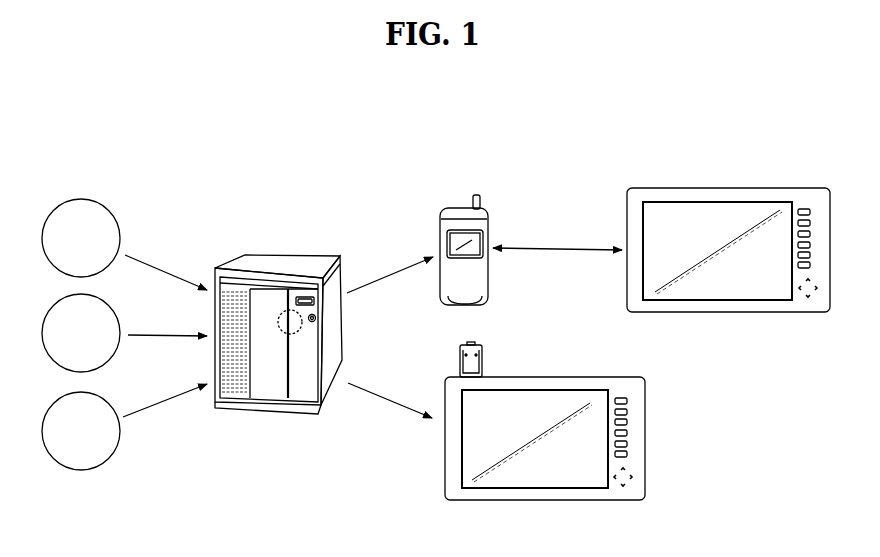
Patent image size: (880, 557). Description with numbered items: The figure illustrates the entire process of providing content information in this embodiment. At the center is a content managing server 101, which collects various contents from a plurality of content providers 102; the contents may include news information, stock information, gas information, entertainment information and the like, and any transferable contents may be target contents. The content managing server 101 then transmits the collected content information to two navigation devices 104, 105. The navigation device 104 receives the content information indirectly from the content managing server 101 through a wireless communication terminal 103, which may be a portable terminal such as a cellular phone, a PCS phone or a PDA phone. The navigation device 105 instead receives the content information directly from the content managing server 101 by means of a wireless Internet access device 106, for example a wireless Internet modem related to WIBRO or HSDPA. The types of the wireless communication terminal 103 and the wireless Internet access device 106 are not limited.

The content managing server 101 is at (292, 257).
The content providers 102 is at (78, 200).
The wireless communication terminal 103 is at (465, 208).
The navigation device 104 is at (727, 188).
The navigation device 105 is at (545, 378).
The wireless Internet access device 106 is at (482, 360).